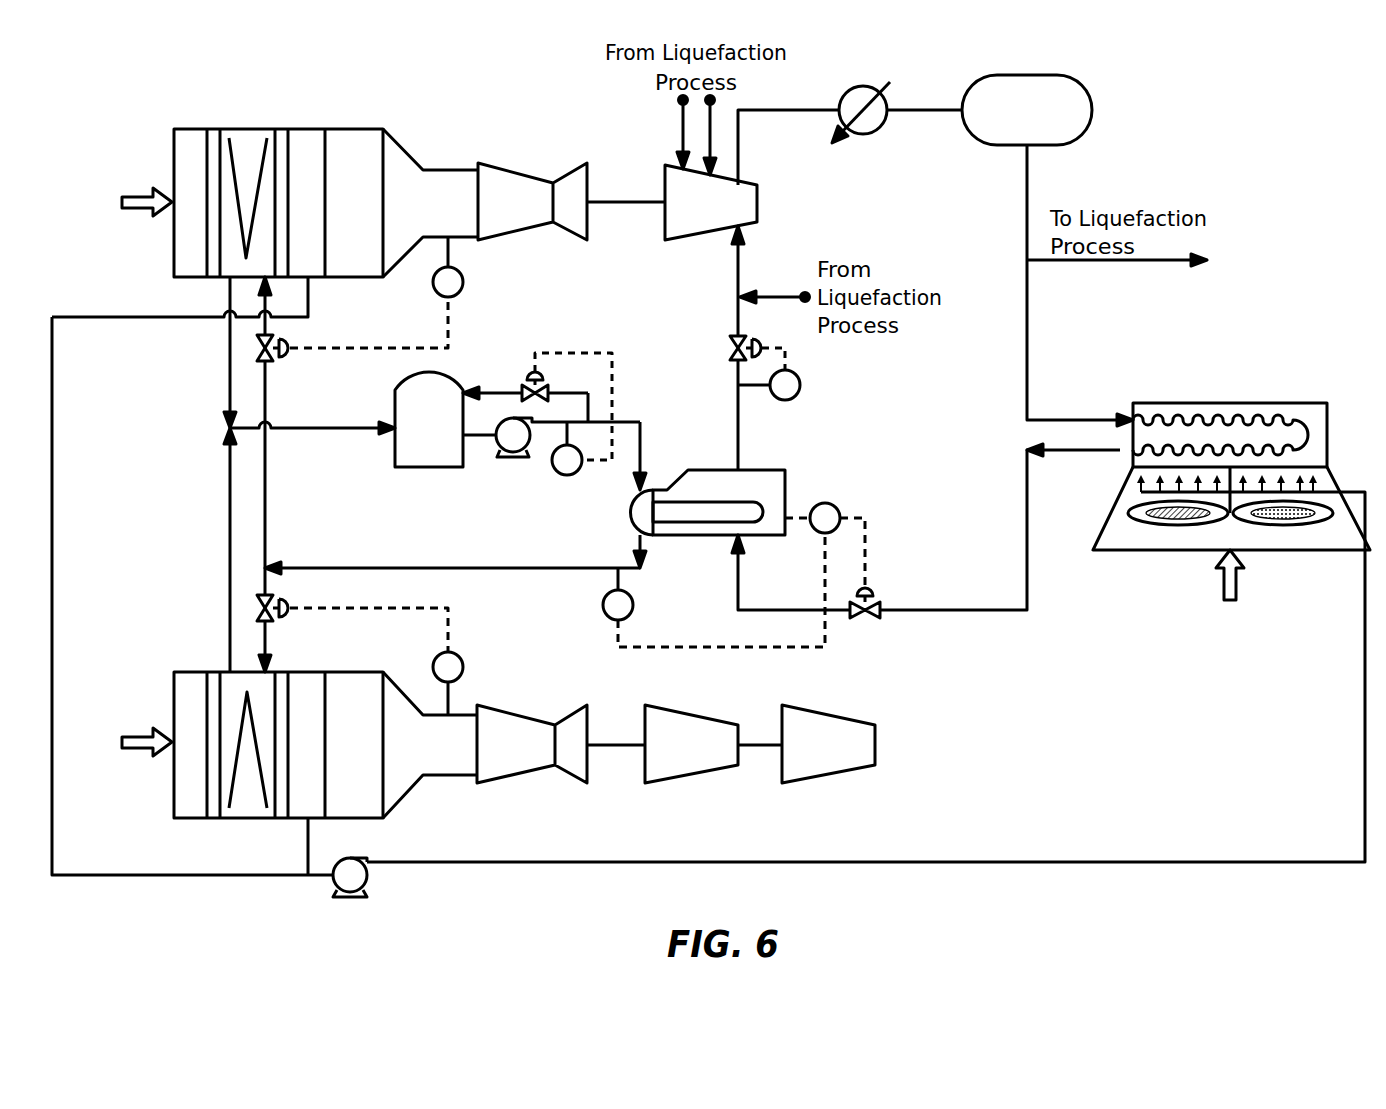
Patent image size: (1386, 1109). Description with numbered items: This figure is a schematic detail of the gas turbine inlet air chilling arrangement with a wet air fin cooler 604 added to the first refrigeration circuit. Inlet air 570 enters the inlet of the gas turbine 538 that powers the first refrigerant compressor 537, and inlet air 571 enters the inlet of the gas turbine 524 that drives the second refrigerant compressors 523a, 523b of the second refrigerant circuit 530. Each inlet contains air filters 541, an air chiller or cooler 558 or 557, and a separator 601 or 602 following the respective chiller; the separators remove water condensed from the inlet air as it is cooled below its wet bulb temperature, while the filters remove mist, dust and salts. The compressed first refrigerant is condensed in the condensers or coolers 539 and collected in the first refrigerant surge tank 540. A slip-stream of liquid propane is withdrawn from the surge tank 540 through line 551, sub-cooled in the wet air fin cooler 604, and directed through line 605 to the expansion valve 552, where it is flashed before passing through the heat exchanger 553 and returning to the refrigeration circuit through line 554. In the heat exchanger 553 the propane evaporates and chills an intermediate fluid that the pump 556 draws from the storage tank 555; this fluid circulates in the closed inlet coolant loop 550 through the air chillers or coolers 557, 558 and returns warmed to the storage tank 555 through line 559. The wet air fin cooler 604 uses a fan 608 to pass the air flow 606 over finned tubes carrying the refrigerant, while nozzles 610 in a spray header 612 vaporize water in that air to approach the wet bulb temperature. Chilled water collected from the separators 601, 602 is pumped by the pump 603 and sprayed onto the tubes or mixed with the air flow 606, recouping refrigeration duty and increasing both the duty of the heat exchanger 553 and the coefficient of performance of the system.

The compressor 523a is at (694, 712).
The compressor 523b is at (829, 712).
The gas turbine 524 is at (520, 712).
The second refrigerant circuit 530 is at (772, 110).
The first refrigerant compressor 537 is at (662, 178).
The gas turbine 538 is at (514, 170).
The condensers or coolers 539 is at (882, 128).
The first refrigerant surge tank 540 is at (1086, 87).
The air filters 541 is at (190, 130).
The inlet coolant loop 550 is at (228, 530).
The line 551 is at (1027, 368).
The expansion valve 552 is at (876, 598).
The heat exchanger 553 is at (789, 491).
The line 554 is at (736, 432).
The storage tank 555 is at (415, 467).
The pump 556 is at (523, 460).
The air chiller or cooler 557 is at (245, 821).
The air chiller or cooler 558 is at (247, 130).
The line 559 is at (313, 426).
The inlet air 570 is at (132, 191).
The inlet air 571 is at (132, 733).
The separator 601 is at (304, 130).
The separator 602 is at (304, 672).
The pump 603 is at (366, 888).
The wet air fin cooler 604 is at (1289, 403).
The line 605 is at (1020, 546).
The air flow 606 is at (1222, 600).
The fan 608 is at (1314, 535).
The nozzles 610 is at (1315, 486).
The spray header 612 is at (1148, 492).